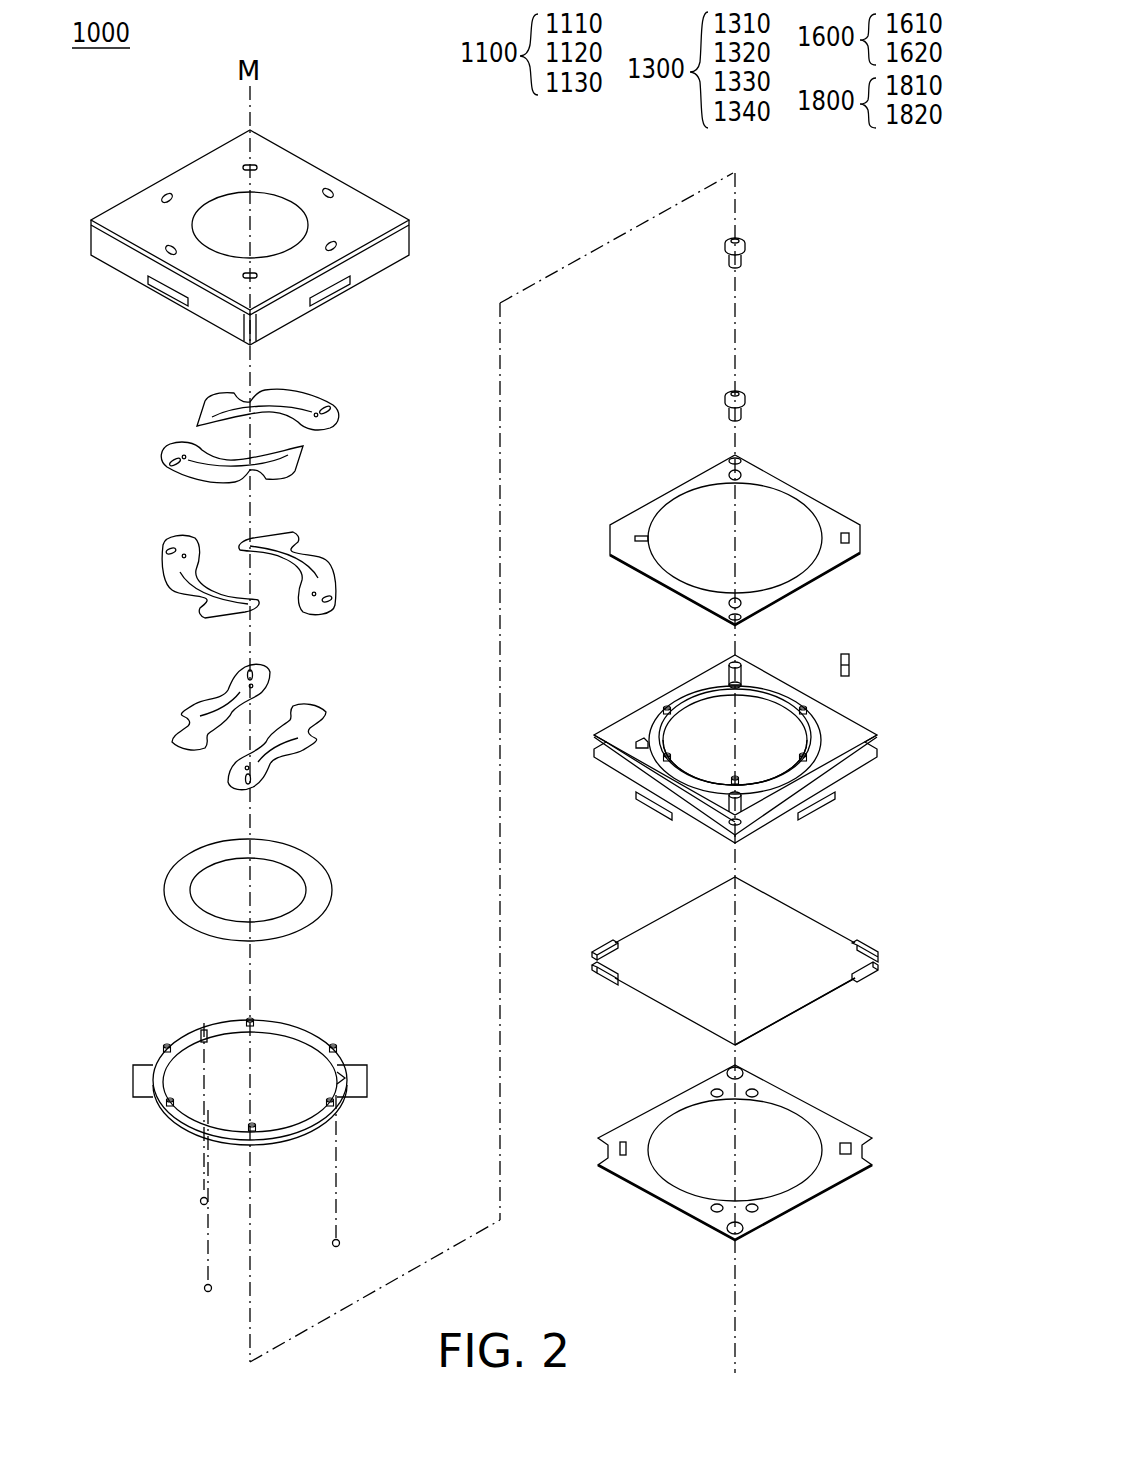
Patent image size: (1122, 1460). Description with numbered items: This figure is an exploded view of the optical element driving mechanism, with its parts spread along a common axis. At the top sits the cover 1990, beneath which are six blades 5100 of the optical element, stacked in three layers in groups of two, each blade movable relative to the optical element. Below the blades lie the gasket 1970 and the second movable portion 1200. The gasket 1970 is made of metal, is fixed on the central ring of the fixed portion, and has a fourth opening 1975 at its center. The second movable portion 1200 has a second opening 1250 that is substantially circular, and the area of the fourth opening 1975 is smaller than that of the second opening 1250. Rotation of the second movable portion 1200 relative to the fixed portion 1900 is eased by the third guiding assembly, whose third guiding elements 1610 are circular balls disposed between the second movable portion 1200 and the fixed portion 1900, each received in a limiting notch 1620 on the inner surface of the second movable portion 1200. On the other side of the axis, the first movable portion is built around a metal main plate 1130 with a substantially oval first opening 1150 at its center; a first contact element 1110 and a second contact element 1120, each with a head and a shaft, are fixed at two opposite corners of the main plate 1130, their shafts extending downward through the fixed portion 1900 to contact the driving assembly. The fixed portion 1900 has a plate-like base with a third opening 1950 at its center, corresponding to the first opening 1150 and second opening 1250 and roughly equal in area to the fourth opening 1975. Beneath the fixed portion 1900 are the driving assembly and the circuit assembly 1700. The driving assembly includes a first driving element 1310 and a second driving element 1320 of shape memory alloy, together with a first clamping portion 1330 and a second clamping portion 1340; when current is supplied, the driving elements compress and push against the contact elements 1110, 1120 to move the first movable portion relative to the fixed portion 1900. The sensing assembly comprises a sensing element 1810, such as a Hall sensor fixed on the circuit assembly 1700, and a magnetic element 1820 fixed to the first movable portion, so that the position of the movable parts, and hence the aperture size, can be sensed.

The first contact element 1110 is at (745, 258).
The second contact element 1120 is at (743, 392).
The main plate 1130 is at (708, 540).
The first opening 1150 is at (812, 568).
The second movable portion 1200 is at (252, 1081).
The second opening 1250 is at (362, 1081).
The first driving element 1310 is at (734, 960).
The second driving element 1320 is at (812, 1005).
The first clamping portion 1330 is at (592, 952).
The second clamping portion 1340 is at (875, 975).
The third guiding element 1610 is at (340, 1243).
The limiting notch 1620 is at (203, 1033).
The circuit assembly 1700 is at (746, 1152).
The sensing element 1810 is at (852, 1148).
The magnetic element 1820 is at (852, 661).
The fixed portion 1900 is at (720, 749).
The third opening 1950 is at (796, 766).
The gasket 1970 is at (295, 876).
The fourth opening 1975 is at (290, 866).
The cover 1990 is at (400, 247).
The blade 5100 is at (335, 412).